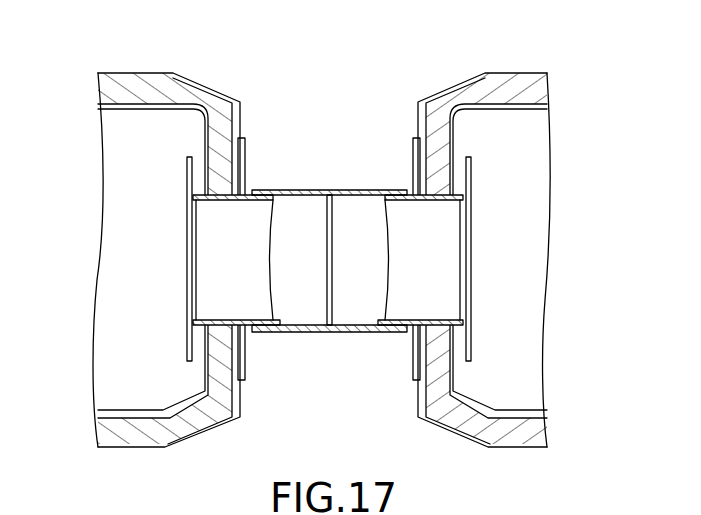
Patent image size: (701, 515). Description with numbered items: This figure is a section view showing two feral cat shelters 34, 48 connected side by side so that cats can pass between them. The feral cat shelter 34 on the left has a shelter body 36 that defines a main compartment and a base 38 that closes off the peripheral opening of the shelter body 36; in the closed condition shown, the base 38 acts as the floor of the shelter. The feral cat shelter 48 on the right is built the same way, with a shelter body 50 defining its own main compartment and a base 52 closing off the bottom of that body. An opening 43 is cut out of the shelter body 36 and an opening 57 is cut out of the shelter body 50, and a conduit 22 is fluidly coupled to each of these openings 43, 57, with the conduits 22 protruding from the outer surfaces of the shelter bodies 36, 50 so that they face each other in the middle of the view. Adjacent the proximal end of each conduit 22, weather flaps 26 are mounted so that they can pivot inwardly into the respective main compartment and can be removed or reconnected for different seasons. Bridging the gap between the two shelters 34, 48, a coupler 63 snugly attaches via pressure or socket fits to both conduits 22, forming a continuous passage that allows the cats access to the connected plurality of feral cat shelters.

The conduit 22 is at (218, 260).
The weather flaps 26 is at (188, 334).
The feral cat shelter 34 is at (142, 274).
The shelter body 36 is at (132, 73).
The base 38 is at (123, 165).
The opening 43 is at (208, 368).
The feral cat shelter 48 is at (510, 274).
The shelter body 50 is at (520, 73).
The base 52 is at (527, 182).
The opening 57 is at (450, 164).
The coupler 63 is at (330, 190).